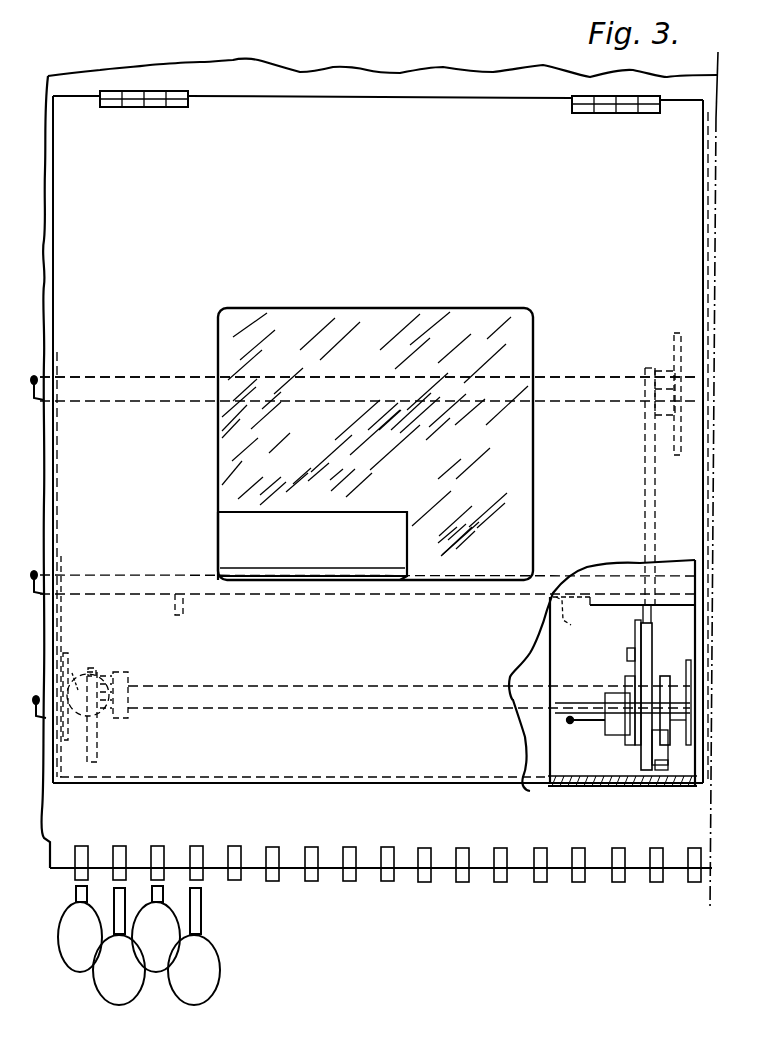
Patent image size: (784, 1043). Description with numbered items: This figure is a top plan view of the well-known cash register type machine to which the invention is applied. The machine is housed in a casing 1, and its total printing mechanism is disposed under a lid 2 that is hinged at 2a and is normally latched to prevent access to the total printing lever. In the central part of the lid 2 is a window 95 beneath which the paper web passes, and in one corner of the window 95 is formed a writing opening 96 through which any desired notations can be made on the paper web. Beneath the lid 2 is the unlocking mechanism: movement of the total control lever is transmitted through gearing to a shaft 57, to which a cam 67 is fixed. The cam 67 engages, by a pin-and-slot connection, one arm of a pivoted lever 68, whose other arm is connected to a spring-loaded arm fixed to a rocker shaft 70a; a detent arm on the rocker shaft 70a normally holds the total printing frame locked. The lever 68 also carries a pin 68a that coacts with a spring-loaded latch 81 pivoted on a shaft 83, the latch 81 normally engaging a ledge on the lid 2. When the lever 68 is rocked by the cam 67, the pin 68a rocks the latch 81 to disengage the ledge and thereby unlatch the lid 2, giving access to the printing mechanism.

The casing 1 is at (523, 862).
The lid 2 is at (683, 232).
The hinge 2a is at (607, 108).
The shaft 57 is at (577, 392).
The cam 67 is at (672, 348).
The pivoted lever 68 is at (645, 468).
The pin 68a is at (663, 762).
The rocker shaft 70a is at (573, 724).
The latch 81 is at (664, 676).
The shaft 83 is at (565, 698).
The window 95 is at (330, 322).
The writing opening 96 is at (232, 528).